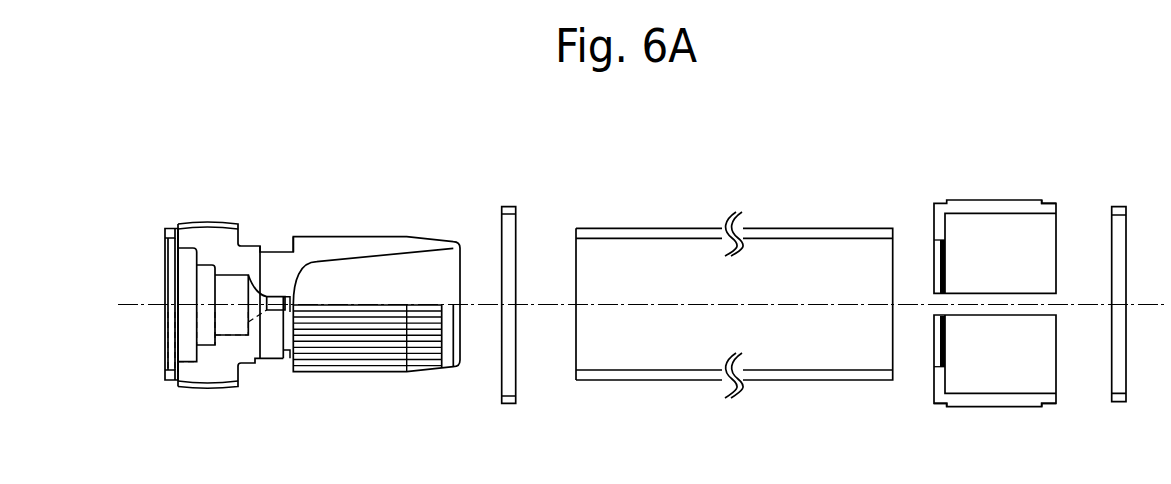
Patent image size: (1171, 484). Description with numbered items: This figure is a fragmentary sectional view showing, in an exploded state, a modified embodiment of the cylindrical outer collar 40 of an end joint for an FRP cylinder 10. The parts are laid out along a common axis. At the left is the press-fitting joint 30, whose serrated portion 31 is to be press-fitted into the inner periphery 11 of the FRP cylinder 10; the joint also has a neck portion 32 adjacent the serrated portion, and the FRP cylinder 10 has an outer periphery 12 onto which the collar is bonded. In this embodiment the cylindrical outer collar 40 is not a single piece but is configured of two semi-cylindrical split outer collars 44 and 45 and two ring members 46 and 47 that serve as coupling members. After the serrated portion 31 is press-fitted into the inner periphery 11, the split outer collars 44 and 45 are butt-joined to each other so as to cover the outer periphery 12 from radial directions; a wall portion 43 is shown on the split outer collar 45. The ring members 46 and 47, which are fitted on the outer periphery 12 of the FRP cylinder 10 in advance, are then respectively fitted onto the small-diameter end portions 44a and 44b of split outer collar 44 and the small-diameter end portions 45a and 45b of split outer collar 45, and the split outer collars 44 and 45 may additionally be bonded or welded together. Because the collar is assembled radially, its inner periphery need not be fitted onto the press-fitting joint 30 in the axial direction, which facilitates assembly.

The FRP cylinder 10 is at (734, 293).
The inner periphery 11 is at (658, 362).
The outer periphery 12 is at (652, 237).
The press-fitting joint 30 is at (345, 237).
The serrated portion 31 is at (340, 342).
The neck portion 32 is at (290, 353).
The cylindrical outer collar 40 is at (985, 256).
The side wall member 43 is at (937, 350).
The semi-cylindrical split outer collar 44 is at (985, 195).
The small-diameter end portion 44a is at (940, 203).
The small-diameter end portion 44b is at (1050, 173).
The semi-cylindrical split outer collar 45 is at (985, 281).
The small-diameter end portion 45a is at (943, 407).
The small-diameter end portion 45b is at (1053, 433).
The ring member 46 is at (510, 207).
The ring member 47 is at (1118, 207).